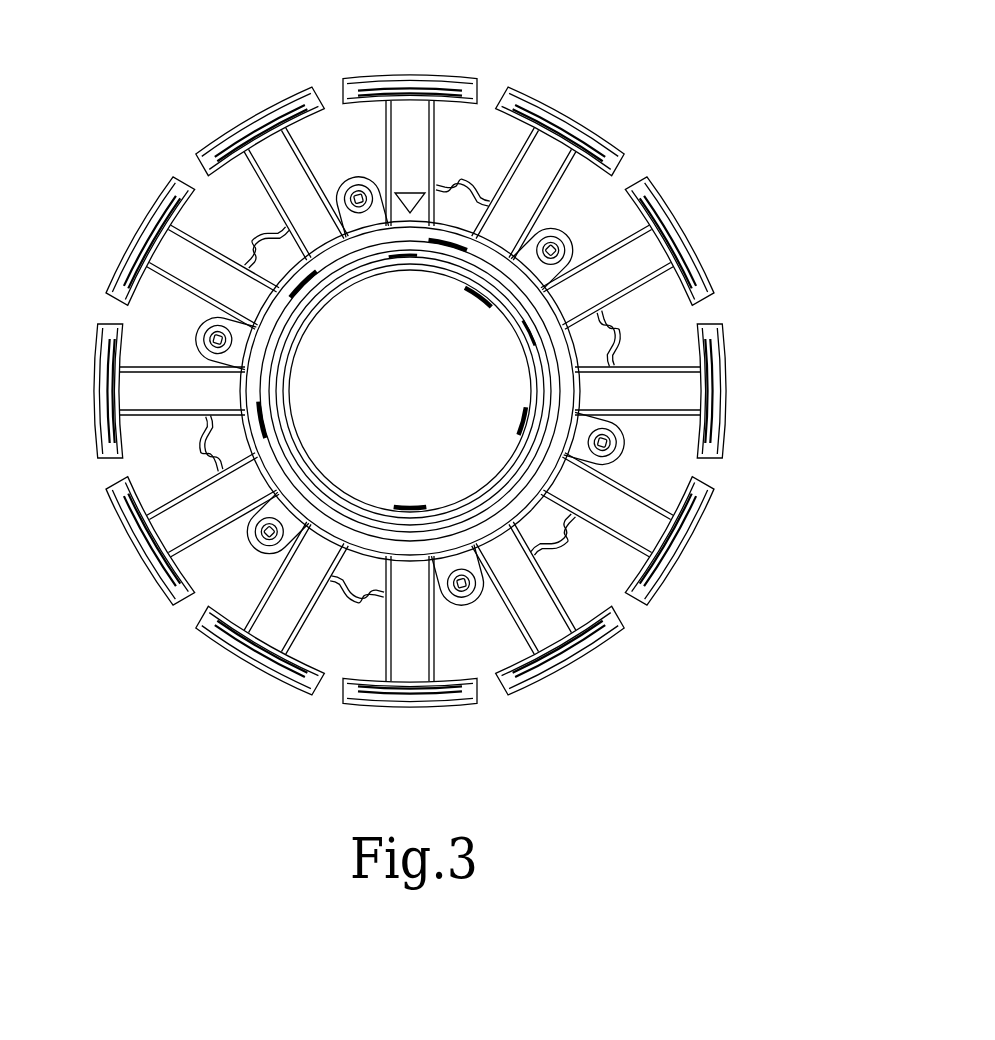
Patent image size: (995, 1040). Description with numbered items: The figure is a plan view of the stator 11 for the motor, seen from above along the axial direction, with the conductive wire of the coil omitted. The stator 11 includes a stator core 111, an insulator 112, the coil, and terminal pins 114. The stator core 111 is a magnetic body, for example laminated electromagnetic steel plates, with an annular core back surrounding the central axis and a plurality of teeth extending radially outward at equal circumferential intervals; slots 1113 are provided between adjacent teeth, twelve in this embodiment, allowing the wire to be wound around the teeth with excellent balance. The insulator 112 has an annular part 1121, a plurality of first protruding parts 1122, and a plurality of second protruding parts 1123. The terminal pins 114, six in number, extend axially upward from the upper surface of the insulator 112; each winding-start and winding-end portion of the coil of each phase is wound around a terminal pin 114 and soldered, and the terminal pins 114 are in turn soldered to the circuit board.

The stator 11 is at (411, 362).
The stator core 111 is at (725, 353).
The insulator 112 is at (588, 274).
The slot 1113 is at (494, 130).
The annular part 1121 is at (268, 300).
The first protruding part 1122 is at (167, 250).
The second protruding part 1123 is at (213, 447).
The terminal pin 114 is at (478, 592).